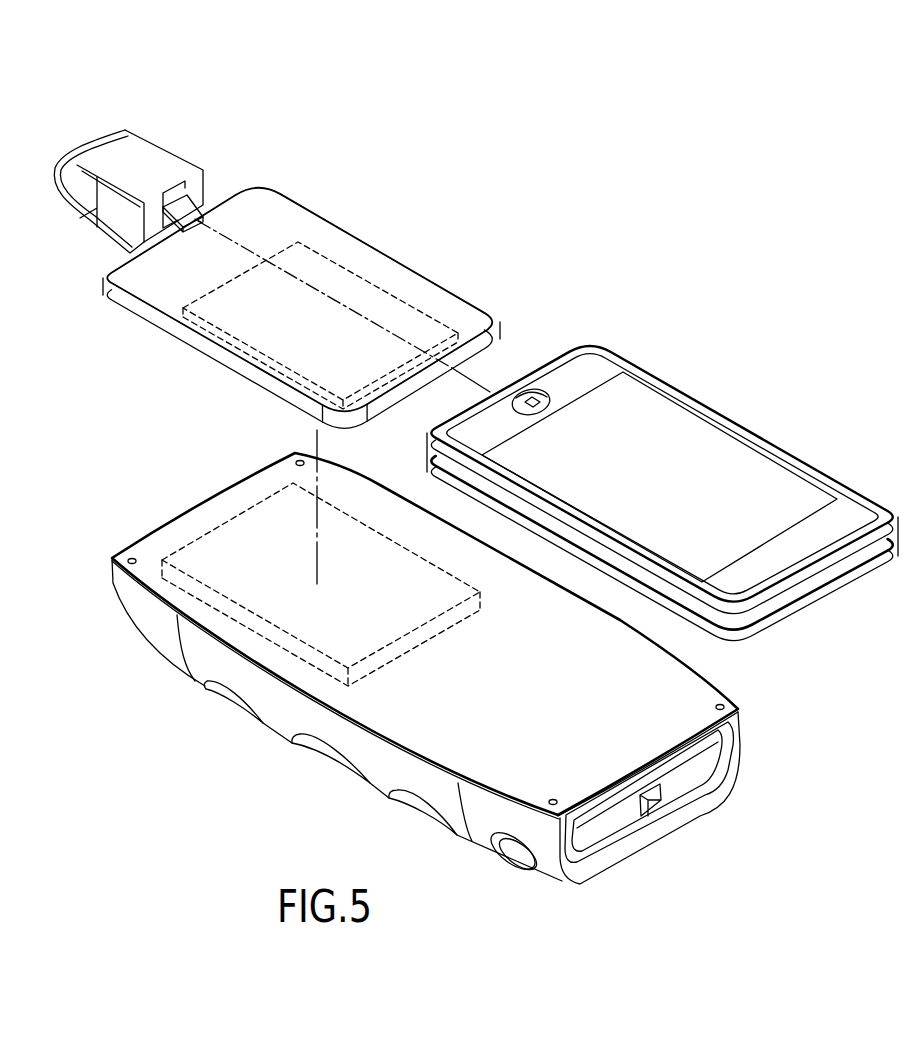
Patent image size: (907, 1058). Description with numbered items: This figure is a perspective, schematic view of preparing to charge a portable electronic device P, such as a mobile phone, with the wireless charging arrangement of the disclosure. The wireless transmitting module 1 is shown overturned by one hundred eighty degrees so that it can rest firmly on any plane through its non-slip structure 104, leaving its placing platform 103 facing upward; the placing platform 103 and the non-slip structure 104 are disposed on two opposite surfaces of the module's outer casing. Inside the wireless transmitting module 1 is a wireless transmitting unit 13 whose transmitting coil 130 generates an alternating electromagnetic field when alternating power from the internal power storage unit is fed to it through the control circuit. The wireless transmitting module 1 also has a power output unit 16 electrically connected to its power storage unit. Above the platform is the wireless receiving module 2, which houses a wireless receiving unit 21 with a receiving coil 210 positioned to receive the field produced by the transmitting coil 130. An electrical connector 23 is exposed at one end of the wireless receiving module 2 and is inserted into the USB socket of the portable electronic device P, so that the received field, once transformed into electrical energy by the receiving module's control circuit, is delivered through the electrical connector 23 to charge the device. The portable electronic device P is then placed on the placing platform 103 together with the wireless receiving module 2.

The wireless transmitting module 1 is at (198, 499).
The wireless receiving module 2 is at (312, 209).
The wireless receiving unit 21 is at (432, 199).
The receiving coil 210 is at (357, 295).
The electrical connector 23 is at (188, 211).
The wireless transmitting unit 13 is at (228, 759).
The transmitting coil 130 is at (235, 612).
The placing platform 103 is at (683, 687).
The non-slip structure 104 is at (292, 742).
The power output unit 16 is at (507, 850).
The portable electronic device P is at (727, 411).